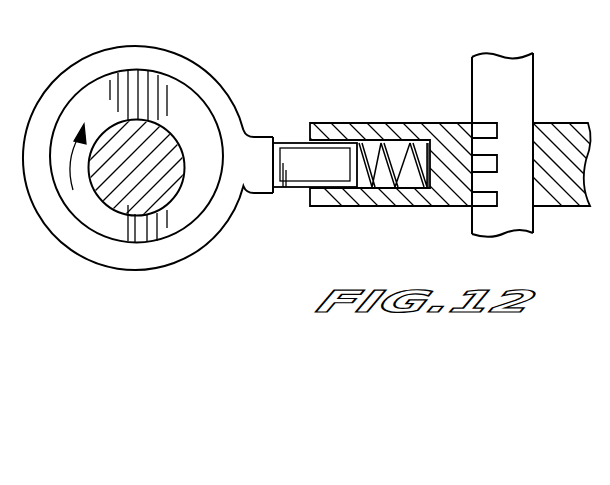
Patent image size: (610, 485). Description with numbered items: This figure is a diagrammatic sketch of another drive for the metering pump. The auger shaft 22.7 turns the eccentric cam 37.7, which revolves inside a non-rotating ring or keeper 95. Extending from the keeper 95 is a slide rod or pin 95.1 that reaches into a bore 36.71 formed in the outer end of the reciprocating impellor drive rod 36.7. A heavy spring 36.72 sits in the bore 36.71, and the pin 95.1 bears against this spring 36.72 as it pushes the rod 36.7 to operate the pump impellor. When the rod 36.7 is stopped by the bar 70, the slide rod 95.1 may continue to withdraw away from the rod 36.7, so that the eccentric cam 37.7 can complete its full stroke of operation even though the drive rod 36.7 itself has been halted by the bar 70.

The non-rotating ring or keeper 95 is at (188, 68).
The slide rod or pin 95.1 is at (293, 137).
The reciprocating impellor drive rod 36.7 is at (448, 202).
The bore 36.71 is at (385, 140).
The heavy spring 36.72 is at (387, 183).
The bar 70 is at (522, 107).
The eccentric cam 37.7 is at (190, 210).
The auger shaft 22.7 is at (128, 207).